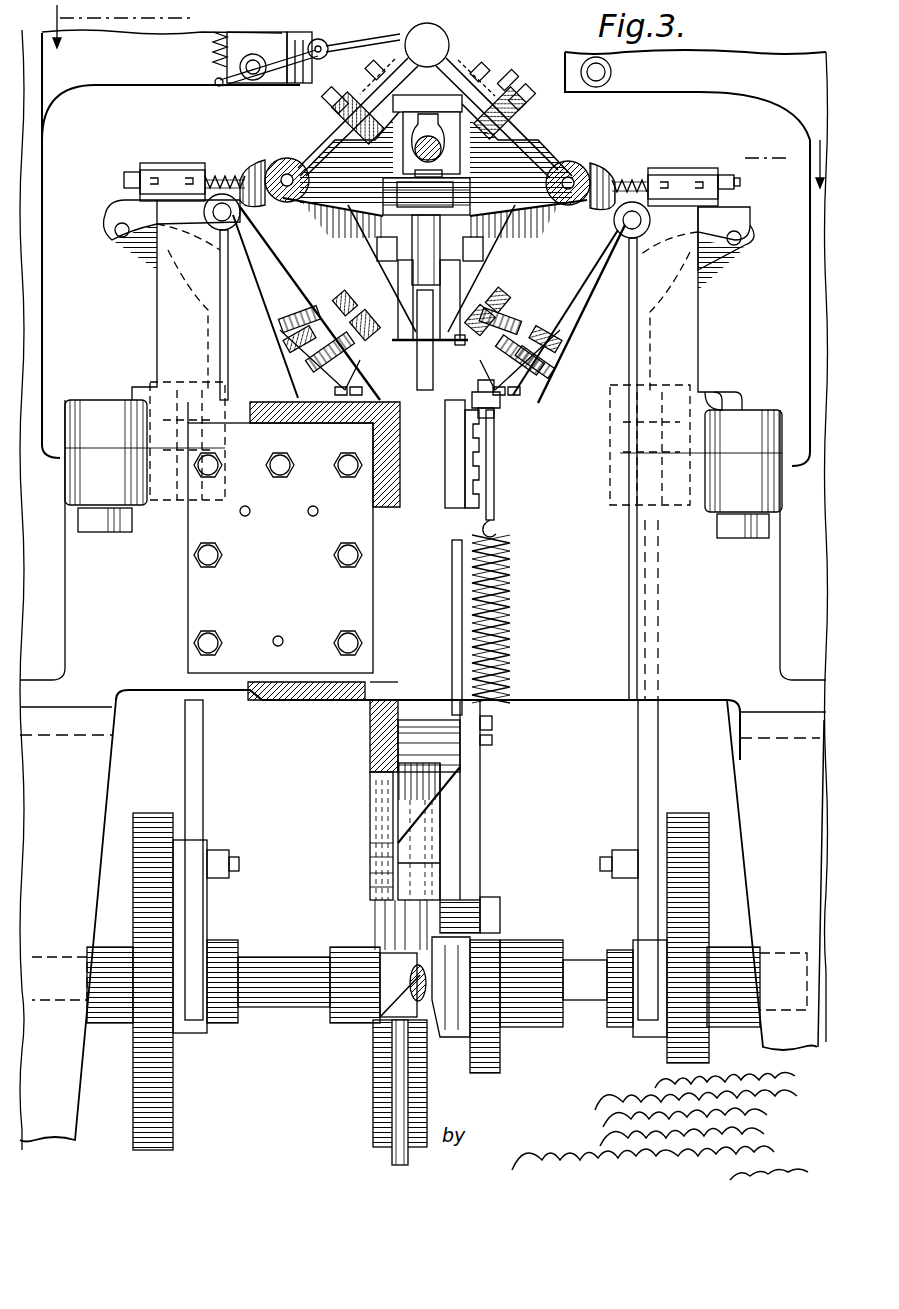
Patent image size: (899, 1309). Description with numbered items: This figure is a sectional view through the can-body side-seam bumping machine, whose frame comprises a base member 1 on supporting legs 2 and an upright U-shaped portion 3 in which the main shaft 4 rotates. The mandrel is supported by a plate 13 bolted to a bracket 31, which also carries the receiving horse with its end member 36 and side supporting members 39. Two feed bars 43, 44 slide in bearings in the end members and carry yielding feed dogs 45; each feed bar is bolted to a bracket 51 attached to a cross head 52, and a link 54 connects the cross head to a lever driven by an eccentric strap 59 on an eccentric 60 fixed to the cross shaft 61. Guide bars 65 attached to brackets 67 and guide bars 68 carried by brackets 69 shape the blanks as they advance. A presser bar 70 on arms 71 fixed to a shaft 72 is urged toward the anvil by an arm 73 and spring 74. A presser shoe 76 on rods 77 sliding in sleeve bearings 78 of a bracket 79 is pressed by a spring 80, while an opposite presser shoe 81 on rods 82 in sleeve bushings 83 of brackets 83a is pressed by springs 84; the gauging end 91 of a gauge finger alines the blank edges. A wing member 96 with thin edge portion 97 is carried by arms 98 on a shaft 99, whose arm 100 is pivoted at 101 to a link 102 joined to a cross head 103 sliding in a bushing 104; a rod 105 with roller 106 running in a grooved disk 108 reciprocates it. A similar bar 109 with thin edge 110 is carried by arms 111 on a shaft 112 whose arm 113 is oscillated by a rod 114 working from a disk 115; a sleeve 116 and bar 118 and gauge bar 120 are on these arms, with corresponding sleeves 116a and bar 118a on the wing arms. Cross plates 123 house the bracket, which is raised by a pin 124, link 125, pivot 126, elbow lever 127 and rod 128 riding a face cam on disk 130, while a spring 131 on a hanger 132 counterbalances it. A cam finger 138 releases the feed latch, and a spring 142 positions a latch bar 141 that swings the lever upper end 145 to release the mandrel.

The base member 1 is at (577, 639).
The supporting legs 2 is at (423, 771).
The upright U-shaped portion 3 is at (42, 108).
The main shaft 4 is at (425, 96).
The supporting plate 13 is at (510, 233).
The bracket 31 is at (372, 749).
The end member 36 is at (556, 158).
The supporting members 39 is at (283, 160).
The feed bar 43 is at (347, 118).
The feed bar 44 is at (520, 118).
The feed dogs 45 is at (328, 101).
The bracket 51 is at (415, 136).
The cross head 52 is at (436, 151).
The link 54 is at (524, 74).
The eccentric strap 59 is at (412, 998).
The eccentric 60 is at (372, 1073).
The cross shaft 61 is at (578, 970).
The guide bar 65 is at (441, 289).
The bracket 67 is at (498, 275).
The guide bar 68 is at (287, 340).
The brackets 69 is at (335, 380).
The presser bar 70 is at (427, 45).
The arms 71 is at (307, 54).
The shaft 72 is at (313, 35).
The arm 73 is at (269, 57).
The spring 74 is at (213, 40).
The presser shoe 76 is at (255, 160).
The rods 77 is at (124, 176).
The sleeve bearings 78 is at (160, 165).
The bracket 79 is at (157, 306).
The spring 80 is at (222, 172).
The presser shoe 81 is at (616, 175).
The rods 82 is at (740, 182).
The sleeve bushings 83 is at (683, 170).
The brackets 83a is at (665, 316).
The springs 84 is at (620, 178).
The gauging end 91 is at (369, 70).
The wing member 96 is at (515, 400).
The projecting edge portion 97 is at (462, 410).
The arms 98 is at (586, 262).
The shaft 99 is at (642, 226).
The arm 100 is at (722, 228).
The pivot 101 is at (742, 238).
The link 102 is at (728, 276).
The cross head 103 is at (715, 390).
The bushing 104 is at (728, 396).
The rod 105 is at (662, 586).
The roller 106 is at (650, 840).
The disk 108 is at (690, 850).
The bar 109 is at (360, 414).
The thin edge 110 is at (345, 468).
The arms 111 is at (310, 303).
The shaft 112 is at (232, 216).
The arm 113 is at (140, 215).
The rod 114 is at (205, 726).
The disk 115 is at (165, 906).
The sleeve 116 is at (305, 356).
The sleeves 116a is at (560, 360).
The bar 118 is at (290, 255).
The bar 118a is at (508, 320).
The gauge bar 120 is at (282, 318).
The cross plates 123 is at (490, 462).
The pin 124 is at (498, 534).
The link 125 is at (512, 572).
The pivot 126 is at (494, 724).
The elbow lever 127 is at (472, 778).
The rod 128 is at (452, 1035).
The disk 130 is at (500, 900).
The spring 131 is at (500, 610).
The hanger 132 is at (500, 488).
The cam finger 138 is at (458, 202).
The latch bar 141 is at (428, 352).
The spring 142 is at (445, 350).
The upper end 145 is at (420, 225).